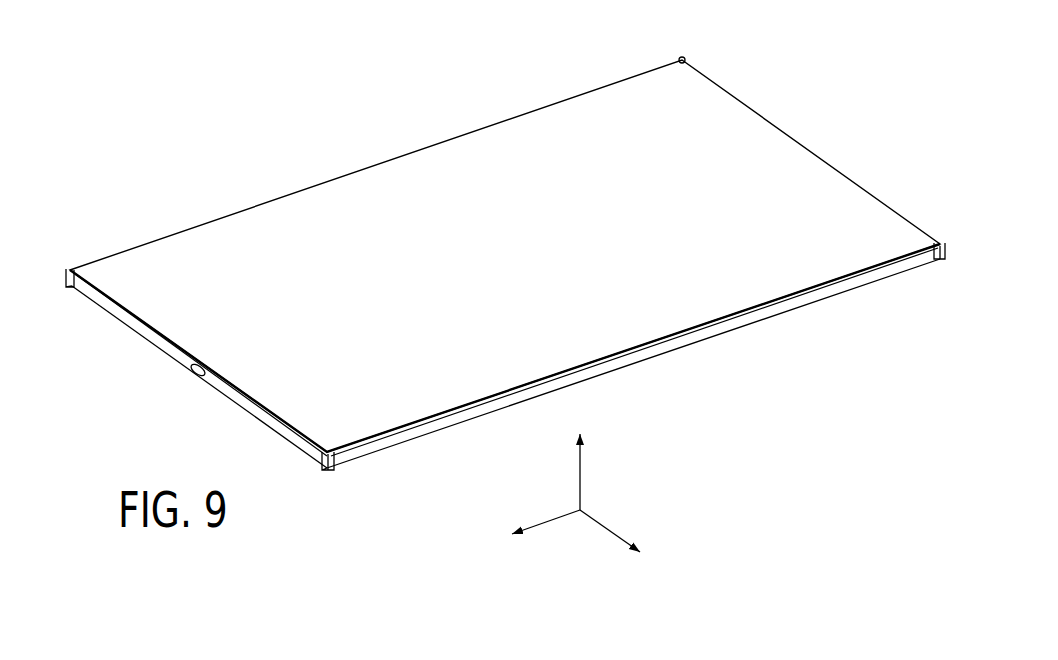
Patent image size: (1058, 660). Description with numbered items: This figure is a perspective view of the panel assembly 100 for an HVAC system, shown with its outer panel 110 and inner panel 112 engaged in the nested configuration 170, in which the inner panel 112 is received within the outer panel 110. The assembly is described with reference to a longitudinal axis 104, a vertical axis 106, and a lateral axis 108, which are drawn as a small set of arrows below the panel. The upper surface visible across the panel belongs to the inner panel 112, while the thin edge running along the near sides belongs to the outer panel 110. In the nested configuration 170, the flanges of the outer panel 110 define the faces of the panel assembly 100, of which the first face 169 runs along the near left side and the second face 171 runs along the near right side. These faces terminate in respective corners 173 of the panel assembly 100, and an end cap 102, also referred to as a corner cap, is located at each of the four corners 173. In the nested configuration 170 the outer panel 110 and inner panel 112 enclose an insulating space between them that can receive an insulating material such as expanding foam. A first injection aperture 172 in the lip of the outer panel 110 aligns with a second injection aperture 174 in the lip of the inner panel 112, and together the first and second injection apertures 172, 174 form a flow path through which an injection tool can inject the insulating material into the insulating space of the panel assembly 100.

The panel assembly 100 is at (166, 210).
The end cap 102 is at (684, 60).
The longitudinal axis 104 is at (550, 517).
The vertical axis 106 is at (583, 477).
The lateral axis 108 is at (608, 527).
The outer panel 110 is at (818, 304).
The inner panel 112 is at (810, 180).
The first face 169 is at (238, 408).
The nested configuration 170 is at (680, 353).
The second face 171 is at (602, 373).
The first injection aperture 172 is at (210, 365).
The corner 173 is at (676, 54).
The second injection aperture 174 is at (204, 372).